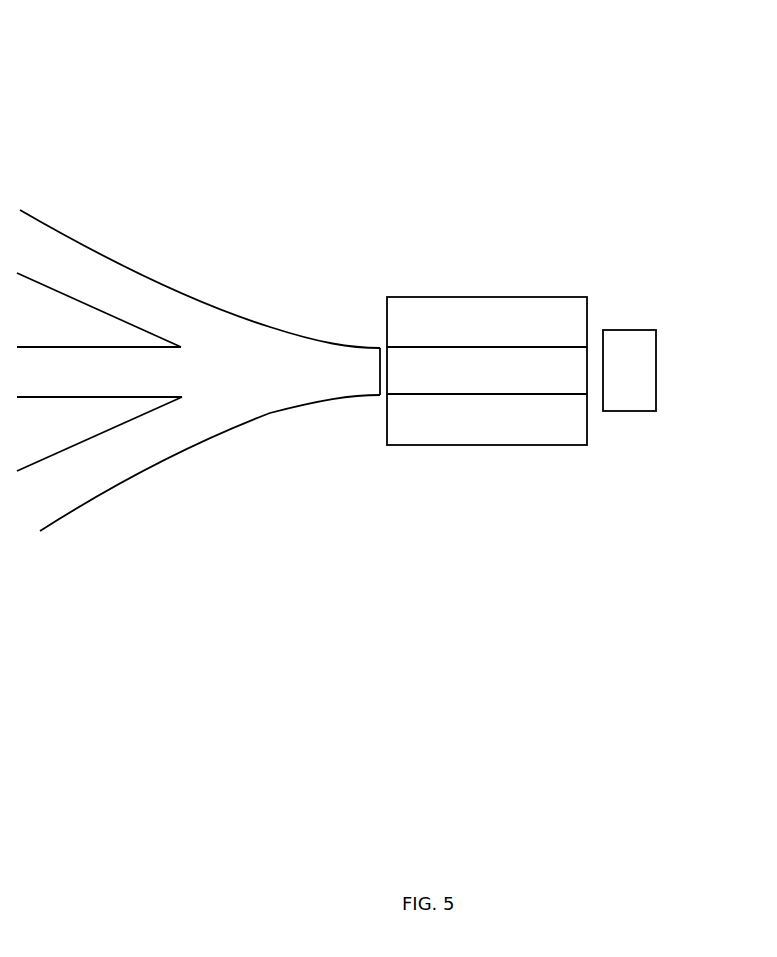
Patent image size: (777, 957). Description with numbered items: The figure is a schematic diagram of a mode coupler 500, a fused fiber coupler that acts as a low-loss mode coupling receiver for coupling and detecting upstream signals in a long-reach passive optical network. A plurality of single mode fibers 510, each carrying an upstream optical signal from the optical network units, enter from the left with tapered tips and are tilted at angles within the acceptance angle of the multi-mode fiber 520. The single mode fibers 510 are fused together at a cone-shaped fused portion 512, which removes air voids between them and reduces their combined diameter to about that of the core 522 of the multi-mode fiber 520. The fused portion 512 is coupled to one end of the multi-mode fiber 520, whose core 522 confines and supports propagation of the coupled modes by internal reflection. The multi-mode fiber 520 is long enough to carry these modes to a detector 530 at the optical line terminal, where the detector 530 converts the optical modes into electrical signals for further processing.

The mode coupler 500 is at (207, 57).
The single mode fibers 510 is at (105, 258).
The fused portion 512 is at (318, 380).
The multi-mode fiber 520 is at (487, 356).
The core 522 is at (480, 343).
The detector 530 is at (656, 330).